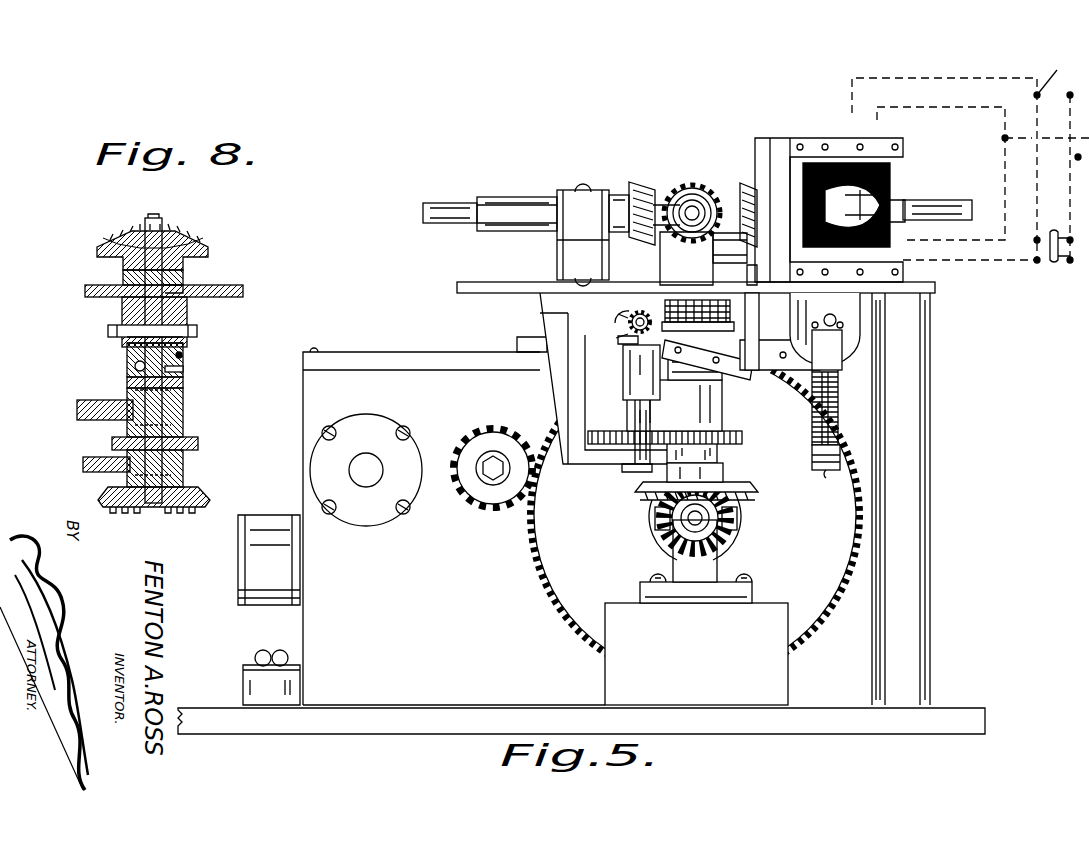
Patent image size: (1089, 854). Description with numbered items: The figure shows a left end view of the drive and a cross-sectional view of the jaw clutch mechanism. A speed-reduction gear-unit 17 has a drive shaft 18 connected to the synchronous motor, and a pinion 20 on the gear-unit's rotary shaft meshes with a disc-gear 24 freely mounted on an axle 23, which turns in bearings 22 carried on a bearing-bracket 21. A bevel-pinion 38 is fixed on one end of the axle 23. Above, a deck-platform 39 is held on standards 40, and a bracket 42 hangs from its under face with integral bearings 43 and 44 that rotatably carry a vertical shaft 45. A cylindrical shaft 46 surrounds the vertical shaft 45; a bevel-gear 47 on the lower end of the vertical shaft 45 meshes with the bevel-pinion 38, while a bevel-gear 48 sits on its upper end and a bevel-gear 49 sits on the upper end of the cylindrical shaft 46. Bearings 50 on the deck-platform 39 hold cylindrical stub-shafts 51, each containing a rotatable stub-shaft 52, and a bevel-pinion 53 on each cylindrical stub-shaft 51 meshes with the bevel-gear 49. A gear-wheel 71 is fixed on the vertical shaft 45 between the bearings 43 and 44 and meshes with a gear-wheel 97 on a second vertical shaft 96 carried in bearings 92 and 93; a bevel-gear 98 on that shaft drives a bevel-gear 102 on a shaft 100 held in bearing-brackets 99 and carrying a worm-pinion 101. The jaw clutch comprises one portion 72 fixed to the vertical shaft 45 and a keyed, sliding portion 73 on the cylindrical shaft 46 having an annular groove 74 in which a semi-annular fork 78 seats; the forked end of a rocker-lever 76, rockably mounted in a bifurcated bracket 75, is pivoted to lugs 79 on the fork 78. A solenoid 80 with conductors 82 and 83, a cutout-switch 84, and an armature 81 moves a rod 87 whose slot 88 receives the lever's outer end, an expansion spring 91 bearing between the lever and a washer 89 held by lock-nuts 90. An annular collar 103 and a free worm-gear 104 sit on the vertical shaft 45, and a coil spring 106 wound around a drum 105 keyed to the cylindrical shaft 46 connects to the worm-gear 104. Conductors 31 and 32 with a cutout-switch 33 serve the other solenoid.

In FIG. 5, the speed-reduction gear-unit 17 is at (454, 521).
In FIG. 5, the drive shaft 18 is at (368, 475).
In FIG. 5, the pinion 20 is at (491, 490).
In FIG. 5, the bearing-bracket 21 is at (600, 672).
In FIG. 5, the bearings 22 is at (638, 588).
In FIG. 5, the axle 23 is at (705, 520).
In FIG. 5, the disc-gear 24 is at (548, 610).
In FIG. 5, the conductor 31 is at (912, 107).
In FIG. 5, the conductor 32 is at (888, 70).
In FIG. 5, the cutout-switch 33 is at (1050, 72).
In FIG. 5, the bevel-pinion 38 is at (680, 525).
In FIG. 8, the deck-platform 39 is at (243, 291).
In FIG. 5, the deck-platform 39 is at (460, 287).
In FIG. 5, the standards 40 is at (901, 499).
In FIG. 5, the bracket 42 is at (548, 302).
In FIG. 8, the bearing 43 is at (183, 406).
In FIG. 5, the bearing 43 is at (722, 400).
In FIG. 8, the bearing 44 is at (175, 462).
In FIG. 5, the bearing 44 is at (723, 464).
In FIG. 8, the vertical shaft 45 is at (153, 420).
In FIG. 8, the cylindrical shaft 46 is at (122, 318).
In FIG. 8, the bevel-gear 47 is at (200, 500).
In FIG. 5, the bevel-gear 47 is at (755, 488).
In FIG. 8, the bevel-gear 48 is at (175, 232).
In FIG. 8, the bevel-gear 49 is at (205, 247).
In FIG. 5, the bevel-gear 49 is at (613, 248).
In FIG. 5, the bearings 50 is at (557, 248).
In FIG. 5, the cylindrical stub-shaft 51 is at (520, 197).
In FIG. 5, the rotatable stub-shaft 52 is at (455, 203).
In FIG. 5, the bevel-pinion 53 is at (640, 182).
In FIG. 8, the gear-wheel 71 is at (198, 443).
In FIG. 5, the gear-wheel 71 is at (742, 437).
In FIG. 8, the jaw clutch portion 72 is at (183, 384).
In FIG. 5, the jaw clutch portion 72 is at (722, 368).
In FIG. 8, the jaw clutch portion 73 is at (183, 355).
In FIG. 5, the jaw clutch portion 73 is at (690, 340).
In FIG. 8, the annular groove 74 is at (136, 366).
In FIG. 5, the bifurcated bracket 75 is at (760, 356).
In FIG. 5, the rocker-lever 76 is at (729, 345).
In FIG. 8, the semi-annular fork 78 is at (127, 352).
In FIG. 8, the lugs 79 is at (183, 369).
In FIG. 5, the solenoid 80 is at (828, 168).
In FIG. 5, the armature 81 is at (825, 329).
In FIG. 5, the conductor 82 is at (968, 262).
In FIG. 5, the conductor 83 is at (980, 235).
In FIG. 5, the cutout-switch 84 is at (1052, 262).
In FIG. 5, the rod 87 is at (838, 405).
In FIG. 5, the slot 88 is at (838, 378).
In FIG. 5, the washer 89 is at (812, 460).
In FIG. 5, the lock-nuts 90 is at (840, 452).
In FIG. 5, the expansion spring 91 is at (838, 392).
In FIG. 5, the bearing 92 is at (635, 448).
In FIG. 5, the bearing 93 is at (625, 365).
In FIG. 5, the vertical shaft 96 is at (635, 475).
In FIG. 5, the gear-wheel 97 is at (605, 448).
In FIG. 5, the bevel-gear 98 is at (618, 338).
In FIG. 5, the bearing-brackets 99 is at (619, 305).
In FIG. 5, the shaft 100 is at (645, 315).
In FIG. 5, the worm-pinion 101 is at (615, 320).
In FIG. 5, the bevel-gear 102 is at (668, 300).
In FIG. 8, the annular collar 103 is at (127, 343).
In FIG. 8, the worm-gear 104 is at (122, 330).
In FIG. 5, the worm-gear 104 is at (759, 320).
In FIG. 8, the cylindrical drum 105 is at (183, 300).
In FIG. 5, the cylindrical drum 105 is at (752, 282).
In FIG. 8, the coil spring 106 is at (183, 316).
In FIG. 5, the coil spring 106 is at (710, 282).